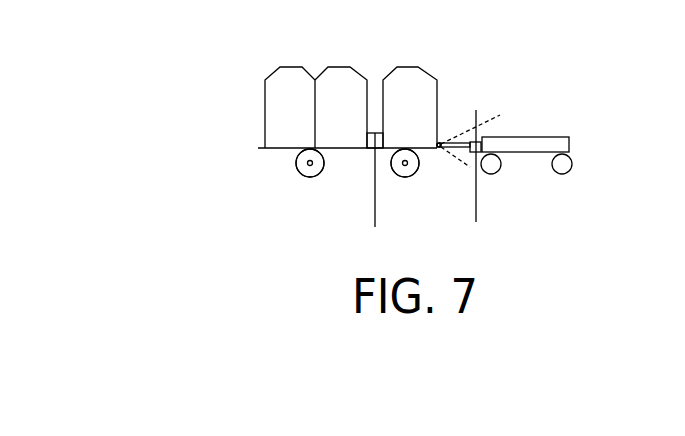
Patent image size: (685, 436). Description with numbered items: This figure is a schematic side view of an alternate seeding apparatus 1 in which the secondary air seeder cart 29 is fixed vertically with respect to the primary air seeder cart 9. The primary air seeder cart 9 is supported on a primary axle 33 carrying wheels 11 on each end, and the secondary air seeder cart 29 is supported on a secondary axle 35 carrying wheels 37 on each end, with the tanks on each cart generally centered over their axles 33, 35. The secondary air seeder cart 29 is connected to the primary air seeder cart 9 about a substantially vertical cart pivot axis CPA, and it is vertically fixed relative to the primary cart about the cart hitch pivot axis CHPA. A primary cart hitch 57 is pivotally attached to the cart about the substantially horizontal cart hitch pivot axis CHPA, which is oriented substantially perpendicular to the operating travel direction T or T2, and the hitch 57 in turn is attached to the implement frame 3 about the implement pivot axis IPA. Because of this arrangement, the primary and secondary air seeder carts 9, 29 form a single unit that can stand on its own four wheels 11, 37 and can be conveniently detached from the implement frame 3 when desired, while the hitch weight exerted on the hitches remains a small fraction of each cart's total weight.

The seeding apparatus 1 is at (402, 19).
The secondary air seeder cart 29 is at (281, 107).
The primary air seeder cart 9 is at (427, 87).
The secondary axle 35 is at (263, 165).
The wheels 37 is at (268, 183).
The primary axle 33 is at (430, 188).
The wheels 11 is at (405, 201).
The primary cart hitch 57 is at (501, 131).
The implement frame 3 is at (531, 172).
The cart pivot axis CPA is at (374, 203).
The cart hitch pivot axis CHPA is at (439, 143).
The implement pivot axis IPA is at (477, 205).
The operating travel direction T is at (597, 142).
The operating travel direction T2 is at (200, 142).